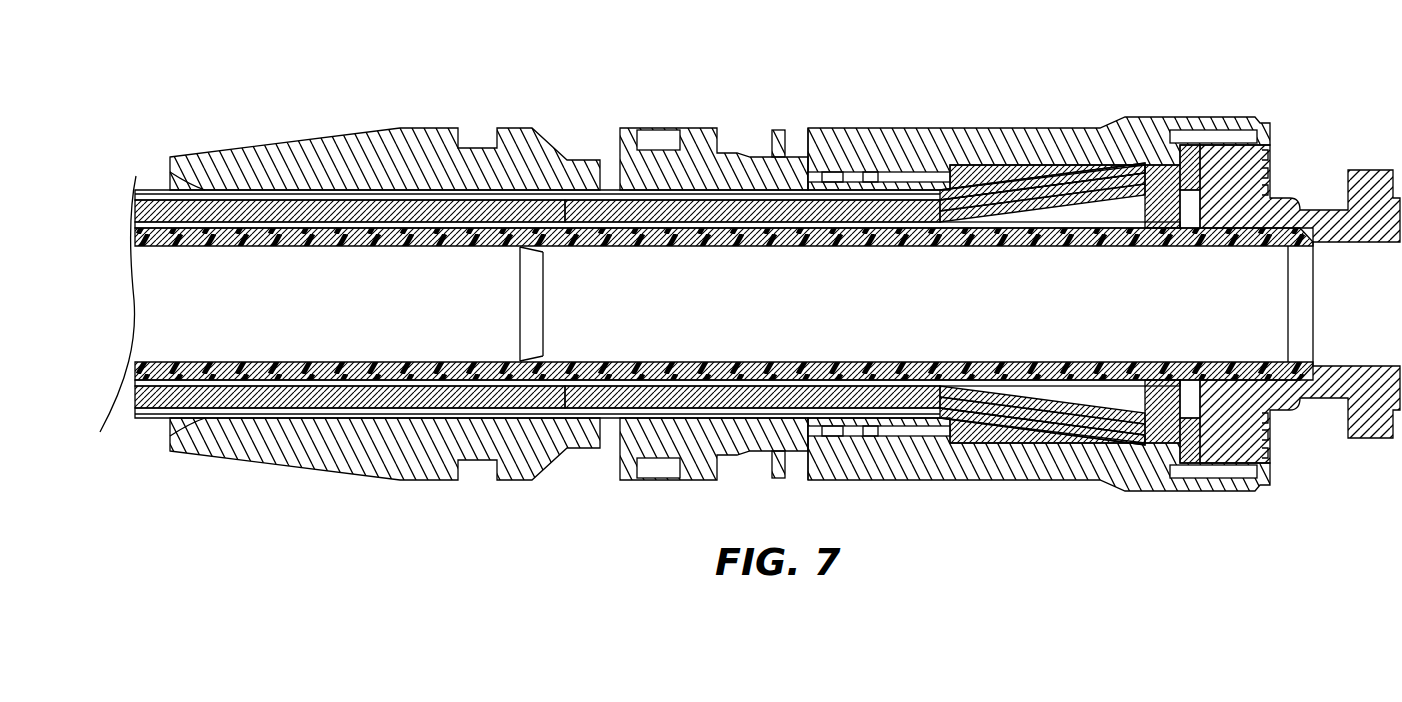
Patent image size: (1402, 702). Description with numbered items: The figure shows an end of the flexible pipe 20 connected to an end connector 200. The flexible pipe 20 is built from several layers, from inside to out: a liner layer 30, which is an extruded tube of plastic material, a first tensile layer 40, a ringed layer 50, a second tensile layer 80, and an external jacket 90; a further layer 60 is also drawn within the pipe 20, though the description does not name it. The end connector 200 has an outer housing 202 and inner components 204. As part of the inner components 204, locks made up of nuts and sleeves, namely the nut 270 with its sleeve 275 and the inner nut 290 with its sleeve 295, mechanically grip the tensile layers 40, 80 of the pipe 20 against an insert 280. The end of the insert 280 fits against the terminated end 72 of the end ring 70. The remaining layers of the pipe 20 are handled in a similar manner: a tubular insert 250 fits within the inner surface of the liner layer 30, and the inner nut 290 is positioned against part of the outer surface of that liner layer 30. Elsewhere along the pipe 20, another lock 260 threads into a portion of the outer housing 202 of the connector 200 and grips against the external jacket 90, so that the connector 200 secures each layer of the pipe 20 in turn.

The flexible pipe 20 is at (695, 307).
The liner layer 30 is at (188, 362).
The first tensile layer 40 is at (128, 382).
The ringed layer 50 is at (128, 396).
The post 60 is at (660, 215).
The end ring 70 is at (881, 205).
The terminated end 72 is at (935, 212).
The second tensile layer 80 is at (150, 410).
The external jacket 90 is at (170, 418).
The end connector 200 is at (739, 277).
The outer housing 202 is at (1292, 121).
The inner components 204 is at (1158, 268).
The tubular insert 250 is at (527, 361).
The lock 260 is at (602, 160).
The nut 270 is at (1004, 182).
The sleeve 275 is at (1084, 185).
The insert 280 is at (1157, 168).
The inner nut 290 is at (1135, 420).
The sleeve 295 is at (1050, 395).